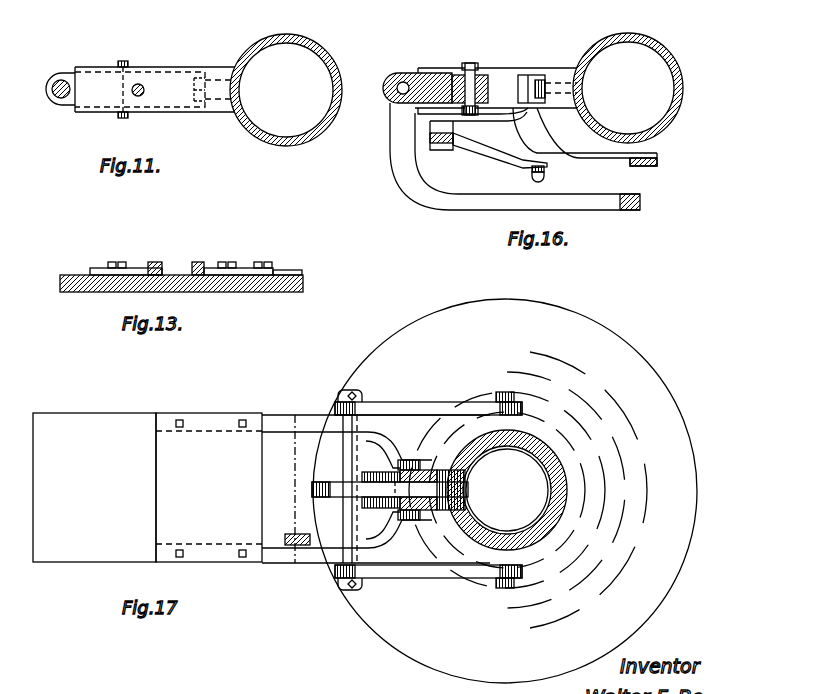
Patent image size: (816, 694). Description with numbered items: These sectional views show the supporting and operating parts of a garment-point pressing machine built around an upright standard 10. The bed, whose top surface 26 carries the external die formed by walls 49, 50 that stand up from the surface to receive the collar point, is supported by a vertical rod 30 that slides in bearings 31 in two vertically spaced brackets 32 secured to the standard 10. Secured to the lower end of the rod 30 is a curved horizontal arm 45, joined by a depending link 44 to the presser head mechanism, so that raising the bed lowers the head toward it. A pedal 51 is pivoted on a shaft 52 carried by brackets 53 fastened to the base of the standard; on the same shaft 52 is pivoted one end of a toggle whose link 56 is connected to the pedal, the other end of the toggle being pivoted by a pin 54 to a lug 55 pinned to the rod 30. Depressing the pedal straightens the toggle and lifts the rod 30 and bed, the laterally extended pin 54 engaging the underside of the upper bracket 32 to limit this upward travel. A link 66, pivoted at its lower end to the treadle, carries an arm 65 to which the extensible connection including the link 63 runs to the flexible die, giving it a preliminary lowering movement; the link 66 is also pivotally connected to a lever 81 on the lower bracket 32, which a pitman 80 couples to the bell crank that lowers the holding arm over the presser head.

In FIG. 11, the standard 10 is at (322, 50).
In FIG. 16, the standard 10 is at (686, 92).
In FIG. 17, the standard 10 is at (560, 492).
In FIG. 13, the top surface 26 is at (304, 283).
In FIG. 11, the vertical rod 30 is at (60, 107).
In FIG. 11, the bearings 31 is at (140, 84).
In FIG. 11, the brackets 32 is at (192, 69).
In FIG. 16, the brackets 32 is at (518, 70).
In FIG. 16, the depending link 44 is at (642, 208).
In FIG. 16, the curved horizontal arm 45 is at (470, 203).
In FIG. 13, the wall 49 is at (198, 266).
In FIG. 13, the wall 50 is at (152, 266).
In FIG. 17, the pedal 51 is at (94, 487).
In FIG. 17, the shaft 52 is at (350, 537).
In FIG. 17, the brackets 53 is at (407, 403).
In FIG. 16, the pin 54 is at (470, 66).
In FIG. 16, the lug 55 is at (432, 73).
In FIG. 17, the toggle link 56 is at (431, 458).
In FIG. 16, the link 63 is at (546, 172).
In FIG. 16, the arm 65 is at (479, 152).
In FIG. 16, the link 66 is at (430, 140).
In FIG. 17, the link 66 is at (281, 549).
In FIG. 16, the pitman 80 is at (652, 168).
In FIG. 16, the lever 81 is at (556, 151).